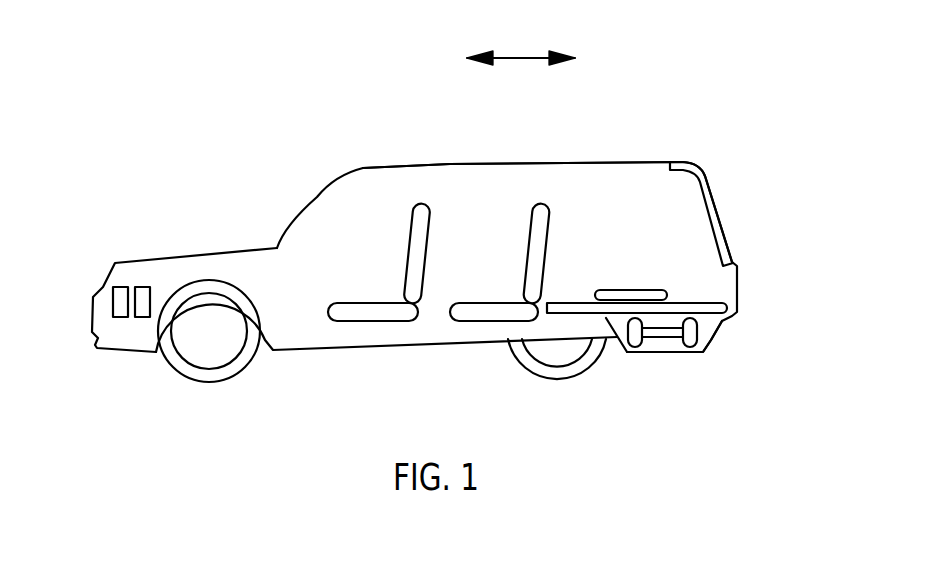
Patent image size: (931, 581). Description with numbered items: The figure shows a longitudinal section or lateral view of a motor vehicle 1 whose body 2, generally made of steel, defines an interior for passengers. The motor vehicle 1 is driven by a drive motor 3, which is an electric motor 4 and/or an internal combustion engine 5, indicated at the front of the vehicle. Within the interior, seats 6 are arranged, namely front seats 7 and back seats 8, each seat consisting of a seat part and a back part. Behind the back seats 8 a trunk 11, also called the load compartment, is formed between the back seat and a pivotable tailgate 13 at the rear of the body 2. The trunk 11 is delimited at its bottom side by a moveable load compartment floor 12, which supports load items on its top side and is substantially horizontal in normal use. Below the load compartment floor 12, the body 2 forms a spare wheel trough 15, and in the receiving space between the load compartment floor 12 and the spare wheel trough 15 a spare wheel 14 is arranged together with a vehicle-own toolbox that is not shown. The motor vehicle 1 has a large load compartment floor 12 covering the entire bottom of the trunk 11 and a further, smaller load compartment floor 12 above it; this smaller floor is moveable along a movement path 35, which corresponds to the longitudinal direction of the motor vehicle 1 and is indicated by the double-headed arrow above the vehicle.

The motor vehicle 1 is at (273, 385).
The body 2 is at (618, 162).
The drive motor 3 is at (139, 265).
The electric motor 4 is at (120, 295).
The internal combustion engine 5 is at (147, 293).
The seats 6 is at (449, 259).
The front seats 7 is at (387, 259).
The back seats 8 is at (510, 259).
The trunk 11 is at (683, 225).
The load compartment floor 12 is at (630, 290).
The pivotable tailgate 13 is at (705, 178).
The spare wheel 14 is at (640, 338).
The spare wheel trough 15 is at (683, 353).
The movement path 35 is at (521, 58).